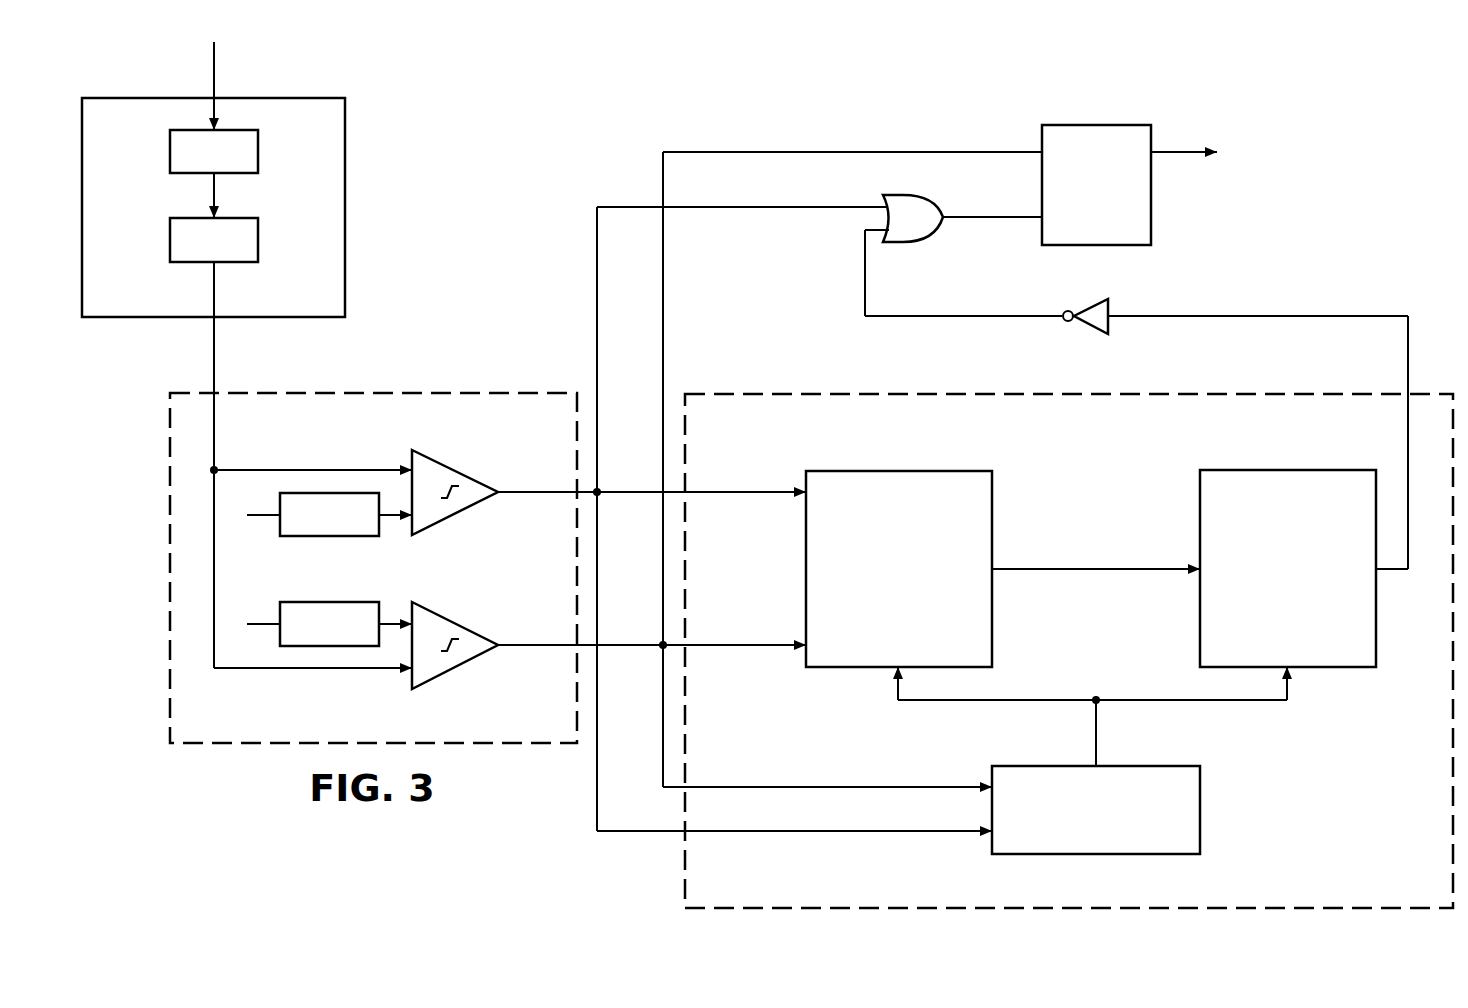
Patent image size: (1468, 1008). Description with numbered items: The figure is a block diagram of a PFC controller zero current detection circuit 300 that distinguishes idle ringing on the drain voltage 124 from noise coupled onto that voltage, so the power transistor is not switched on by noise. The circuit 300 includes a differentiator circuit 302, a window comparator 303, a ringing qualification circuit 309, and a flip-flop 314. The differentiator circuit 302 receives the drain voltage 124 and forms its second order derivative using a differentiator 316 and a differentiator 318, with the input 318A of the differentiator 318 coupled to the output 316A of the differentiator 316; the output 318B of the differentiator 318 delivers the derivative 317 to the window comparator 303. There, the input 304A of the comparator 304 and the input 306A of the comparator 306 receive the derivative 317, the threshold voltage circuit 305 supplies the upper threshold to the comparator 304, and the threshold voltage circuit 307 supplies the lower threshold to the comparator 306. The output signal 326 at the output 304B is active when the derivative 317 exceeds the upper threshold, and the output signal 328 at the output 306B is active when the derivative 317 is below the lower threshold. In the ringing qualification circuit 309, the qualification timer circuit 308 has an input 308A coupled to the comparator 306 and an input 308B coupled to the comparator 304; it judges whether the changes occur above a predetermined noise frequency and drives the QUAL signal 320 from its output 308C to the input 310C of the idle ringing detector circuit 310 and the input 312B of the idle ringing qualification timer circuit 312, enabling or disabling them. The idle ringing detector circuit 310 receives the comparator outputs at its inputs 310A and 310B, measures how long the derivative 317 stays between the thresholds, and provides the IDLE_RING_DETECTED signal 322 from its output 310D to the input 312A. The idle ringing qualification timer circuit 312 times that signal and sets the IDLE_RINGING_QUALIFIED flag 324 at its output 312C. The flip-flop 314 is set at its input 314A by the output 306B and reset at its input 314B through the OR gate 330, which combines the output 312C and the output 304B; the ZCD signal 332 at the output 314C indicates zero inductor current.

The PFC controller zero current detection circuit 300 is at (1345, 70).
The differentiator circuit 302 is at (148, 95).
The drain voltage 124 is at (217, 70).
The differentiator 316 is at (170, 150).
The output of the differentiator 316A is at (206, 180).
The differentiator 318 is at (170, 238).
The input of the differentiator 318A is at (222, 210).
The output of the differentiator 318B is at (208, 268).
The derivative 317 is at (212, 355).
The window comparator 303 is at (166, 583).
The comparator 304 is at (457, 517).
The input of the comparator 304A is at (407, 464).
The output of the comparator 304B is at (505, 481).
The threshold voltage circuit 305 is at (311, 538).
The comparator 306 is at (459, 619).
The input of the comparator 306A is at (407, 675).
The output of the comparator 306B is at (503, 651).
The threshold voltage circuit 307 is at (345, 602).
The output signal 326 is at (642, 488).
The output signal 328 is at (642, 650).
The ringing qualification circuit 309 is at (1341, 813).
The idle ringing detector circuit 310 is at (910, 471).
The input of the idle ringing detector circuit 310A is at (802, 502).
The input of the idle ringing detector circuit 310B is at (802, 654).
The input of the idle ringing detector circuit 310C is at (888, 673).
The output of the idle ringing detector circuit 310D is at (1002, 575).
The idle ringing qualification timer circuit 312 is at (1298, 470).
The input of the idle ringing qualification timer circuit 312A is at (1195, 575).
The input of the idle ringing qualification timer circuit 312B is at (1297, 673).
The output of the idle ringing qualification timer circuit 312C is at (1382, 572).
The IDLE_RING_DETECTED signal 322 is at (1087, 575).
The QUAL signal 320 is at (1098, 728).
The qualification timer circuit 308 is at (1202, 812).
The input of the qualification timer circuit 308A is at (987, 780).
The input of the qualification timer circuit 308B is at (987, 840).
The output of the qualification timer circuit 308C is at (1092, 760).
The flip-flop 314 is at (1097, 125).
The input of the flip-flop 314A is at (1037, 143).
The input of the flip-flop 314B is at (1035, 223).
The output of the flip-flop 314C is at (1157, 143).
The ZERO CURRENT DETECTED (ZCD) signal 332 is at (1178, 157).
The OR gate 330 is at (915, 245).
The IDLE_RINGING_QUALIFIED flag 324 is at (1315, 318).